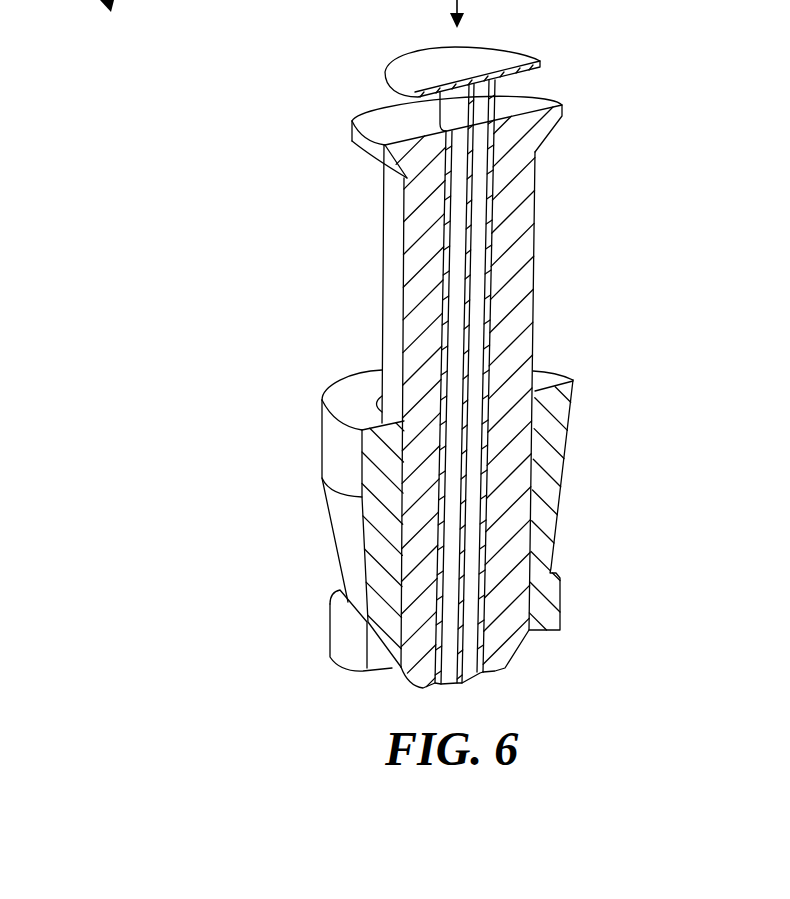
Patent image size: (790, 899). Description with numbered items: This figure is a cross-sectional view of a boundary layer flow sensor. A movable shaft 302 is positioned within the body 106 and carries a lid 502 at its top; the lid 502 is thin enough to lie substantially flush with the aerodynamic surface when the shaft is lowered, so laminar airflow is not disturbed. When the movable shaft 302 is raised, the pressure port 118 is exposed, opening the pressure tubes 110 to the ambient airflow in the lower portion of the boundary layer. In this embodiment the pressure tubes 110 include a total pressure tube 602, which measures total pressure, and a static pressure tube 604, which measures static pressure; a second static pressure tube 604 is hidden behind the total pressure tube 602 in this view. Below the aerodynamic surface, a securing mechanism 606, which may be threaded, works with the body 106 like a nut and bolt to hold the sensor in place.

The body 106 is at (528, 173).
The pressure port 118 is at (410, 122).
The lid 502 is at (405, 72).
The pressure tube 110 is at (341, 383).
The total pressure tube 602 is at (462, 182).
The static pressure tube 604 is at (484, 220).
The movable shaft 302 is at (491, 273).
The securing mechanism 606 is at (556, 447).